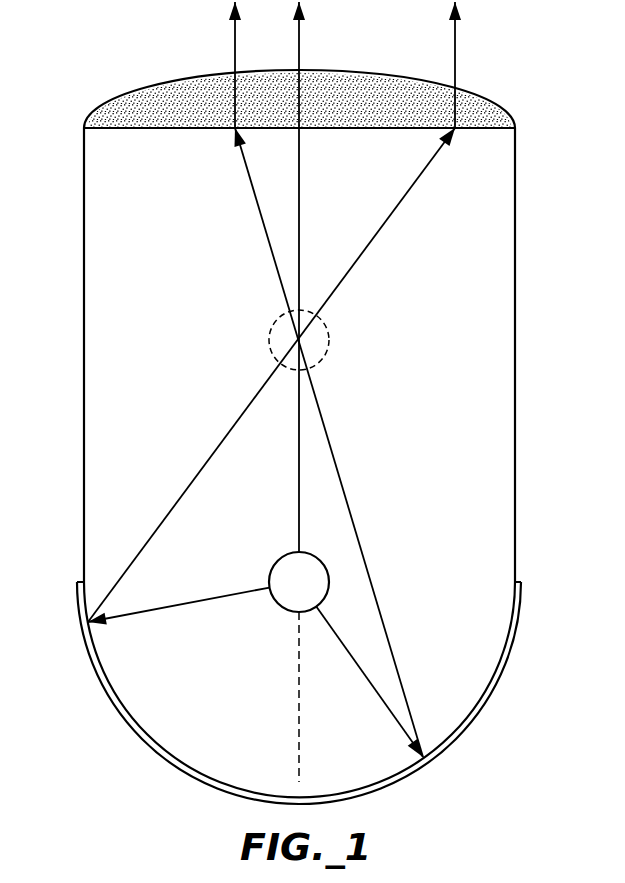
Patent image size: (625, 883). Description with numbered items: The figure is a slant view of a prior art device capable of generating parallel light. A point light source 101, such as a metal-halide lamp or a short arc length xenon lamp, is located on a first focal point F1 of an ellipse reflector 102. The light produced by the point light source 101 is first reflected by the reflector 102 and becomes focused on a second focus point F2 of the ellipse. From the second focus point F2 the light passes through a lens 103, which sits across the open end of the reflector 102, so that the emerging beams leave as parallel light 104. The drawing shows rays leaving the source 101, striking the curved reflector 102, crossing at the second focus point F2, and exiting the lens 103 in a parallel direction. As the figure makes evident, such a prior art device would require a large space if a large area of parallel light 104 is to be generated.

The point light source 101 is at (270, 571).
The ellipse reflector 102 is at (84, 183).
The lens 103 is at (150, 98).
The parallel light 104 is at (457, 57).
The first focal point F1 is at (330, 583).
The second focus point F2 is at (330, 342).